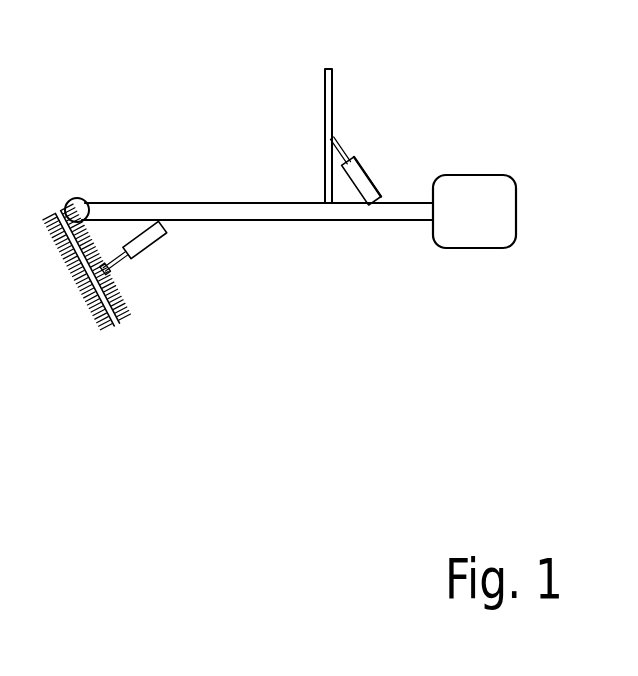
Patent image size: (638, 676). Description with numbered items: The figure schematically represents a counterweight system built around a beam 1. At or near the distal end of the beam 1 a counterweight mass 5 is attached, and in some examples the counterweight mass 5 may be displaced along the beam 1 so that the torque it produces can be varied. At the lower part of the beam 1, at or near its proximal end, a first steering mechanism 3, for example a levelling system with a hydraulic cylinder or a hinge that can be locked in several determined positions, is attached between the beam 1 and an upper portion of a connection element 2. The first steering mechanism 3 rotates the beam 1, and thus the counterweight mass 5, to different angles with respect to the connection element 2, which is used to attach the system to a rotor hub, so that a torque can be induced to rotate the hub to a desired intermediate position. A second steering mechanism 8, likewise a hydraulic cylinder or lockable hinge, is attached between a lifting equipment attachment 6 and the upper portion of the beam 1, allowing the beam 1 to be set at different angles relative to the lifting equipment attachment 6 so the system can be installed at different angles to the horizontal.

The beam 1 is at (288, 238).
The connection element 2 is at (88, 307).
The first steering mechanism 3 is at (140, 265).
The counterweight mass 5 is at (460, 262).
The lifting equipment attachment 6 is at (339, 100).
The second steering mechanism 8 is at (380, 160).